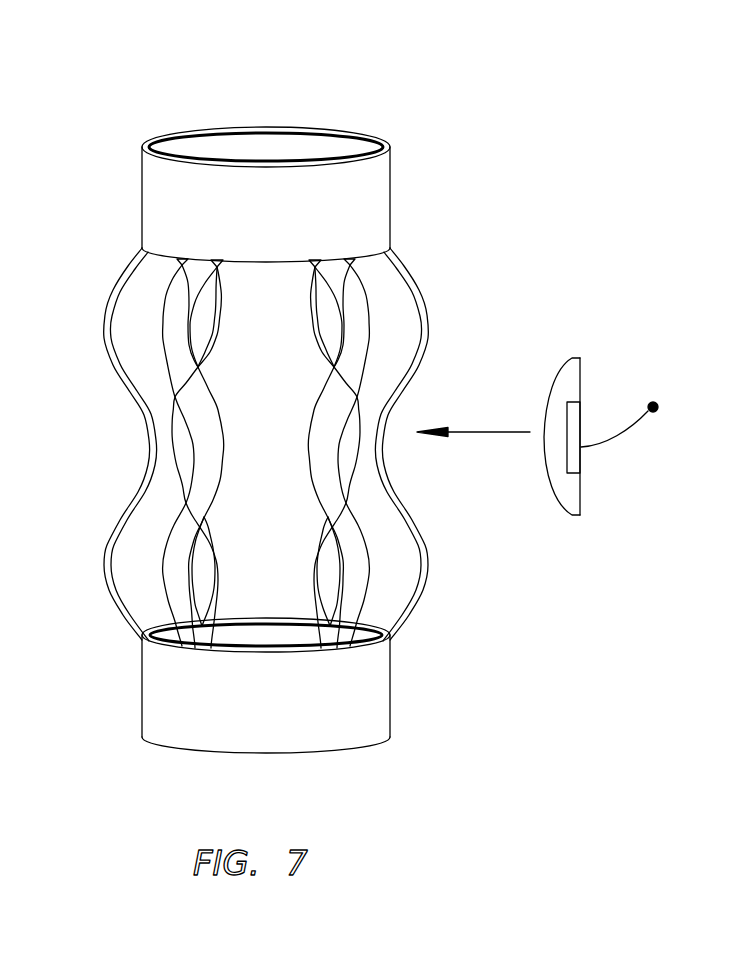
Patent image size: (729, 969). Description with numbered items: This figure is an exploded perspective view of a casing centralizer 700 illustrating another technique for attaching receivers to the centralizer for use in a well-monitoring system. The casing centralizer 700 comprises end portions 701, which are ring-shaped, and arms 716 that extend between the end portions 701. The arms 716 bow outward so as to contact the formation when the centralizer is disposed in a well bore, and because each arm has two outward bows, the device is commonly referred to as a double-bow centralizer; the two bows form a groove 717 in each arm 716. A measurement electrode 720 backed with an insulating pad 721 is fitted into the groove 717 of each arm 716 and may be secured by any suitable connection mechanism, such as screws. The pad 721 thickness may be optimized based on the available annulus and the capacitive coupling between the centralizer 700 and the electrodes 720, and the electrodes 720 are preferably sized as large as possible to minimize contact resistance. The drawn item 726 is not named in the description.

The casing centralizer 700 is at (441, 144).
The end portions 701 is at (143, 165).
The arms 716 is at (426, 289).
The groove 717 is at (388, 422).
The measurement electrodes 720 is at (578, 414).
The insulating pads 721 is at (569, 514).
The electrode lead 726 is at (622, 441).